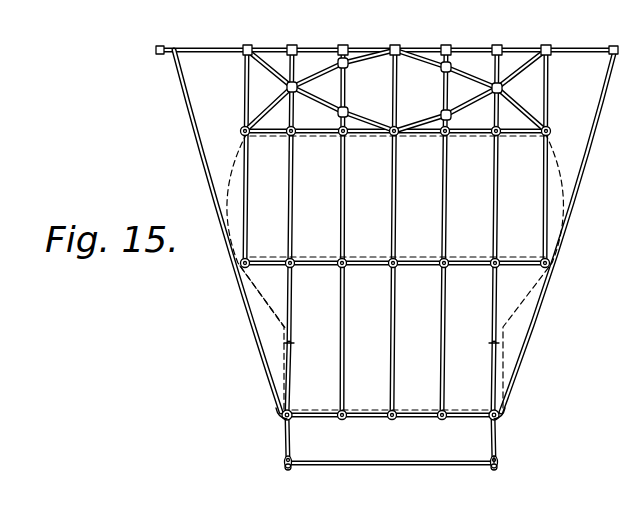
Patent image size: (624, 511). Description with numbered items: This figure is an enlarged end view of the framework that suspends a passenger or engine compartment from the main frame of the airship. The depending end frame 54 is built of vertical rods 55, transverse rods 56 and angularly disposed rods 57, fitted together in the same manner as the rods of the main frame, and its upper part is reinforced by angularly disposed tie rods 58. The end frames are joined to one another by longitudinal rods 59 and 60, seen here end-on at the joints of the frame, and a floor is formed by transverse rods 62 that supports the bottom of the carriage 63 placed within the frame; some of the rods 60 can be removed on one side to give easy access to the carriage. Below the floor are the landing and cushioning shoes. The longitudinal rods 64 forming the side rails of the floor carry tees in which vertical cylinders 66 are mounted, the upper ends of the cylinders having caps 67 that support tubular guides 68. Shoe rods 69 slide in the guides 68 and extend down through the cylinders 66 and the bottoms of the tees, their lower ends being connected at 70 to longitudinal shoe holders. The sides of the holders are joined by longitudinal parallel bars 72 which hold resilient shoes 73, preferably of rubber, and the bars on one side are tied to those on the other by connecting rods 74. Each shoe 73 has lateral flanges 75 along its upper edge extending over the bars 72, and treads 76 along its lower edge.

The end frame 54 is at (533, 318).
The vertical rods 55 is at (448, 223).
The transverse rods 56 is at (408, 267).
The angularly disposed rods 57 is at (227, 248).
The tie rods 58 is at (423, 61).
The longitudinal rods 59 is at (552, 128).
The longitudinal rods 60 is at (552, 267).
The transverse rods 62 is at (366, 413).
The carriage 63 is at (268, 306).
The longitudinal rods 64 is at (505, 416).
The vertical cylinders 66 is at (287, 378).
The caps 67 is at (293, 343).
The tubular guides 68 is at (268, 340).
The shoe rods 69 is at (285, 439).
The connection 70 is at (291, 461).
The longitudinal parallel bars 72 is at (283, 467).
The resilient shoes 73 is at (500, 462).
The connecting rods 74 is at (383, 465).
The lateral flanges 75 is at (500, 453).
The treads 76 is at (496, 469).